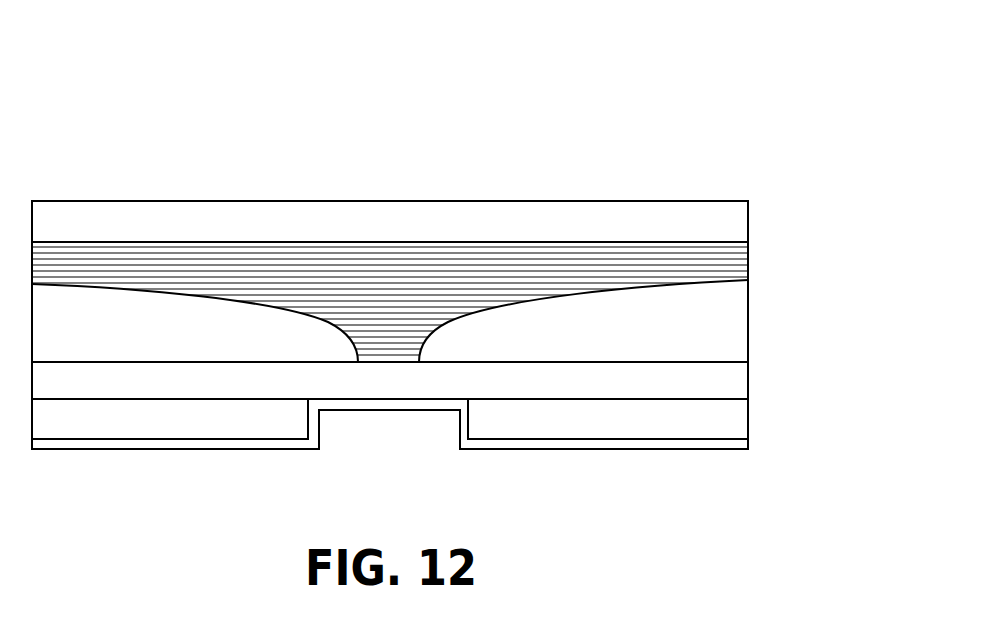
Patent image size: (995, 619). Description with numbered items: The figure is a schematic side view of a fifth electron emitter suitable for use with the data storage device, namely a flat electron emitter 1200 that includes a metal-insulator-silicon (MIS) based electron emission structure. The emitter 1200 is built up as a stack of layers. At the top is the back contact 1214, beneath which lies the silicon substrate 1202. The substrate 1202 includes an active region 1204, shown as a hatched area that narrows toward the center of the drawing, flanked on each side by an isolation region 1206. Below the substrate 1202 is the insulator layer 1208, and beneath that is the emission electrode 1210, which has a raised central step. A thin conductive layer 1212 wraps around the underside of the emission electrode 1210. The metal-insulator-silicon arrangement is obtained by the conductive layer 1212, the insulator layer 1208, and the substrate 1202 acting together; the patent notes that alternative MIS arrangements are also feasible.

The flat electron emitter 1200 is at (786, 116).
The silicon substrate 1202 is at (435, 302).
The active region 1204 is at (418, 303).
The isolation region 1206 is at (182, 339).
The insulator layer 1208 is at (748, 366).
The emission electrode 1210 is at (748, 428).
The conductive layer 1212 is at (670, 443).
The back contact 1214 is at (748, 221).